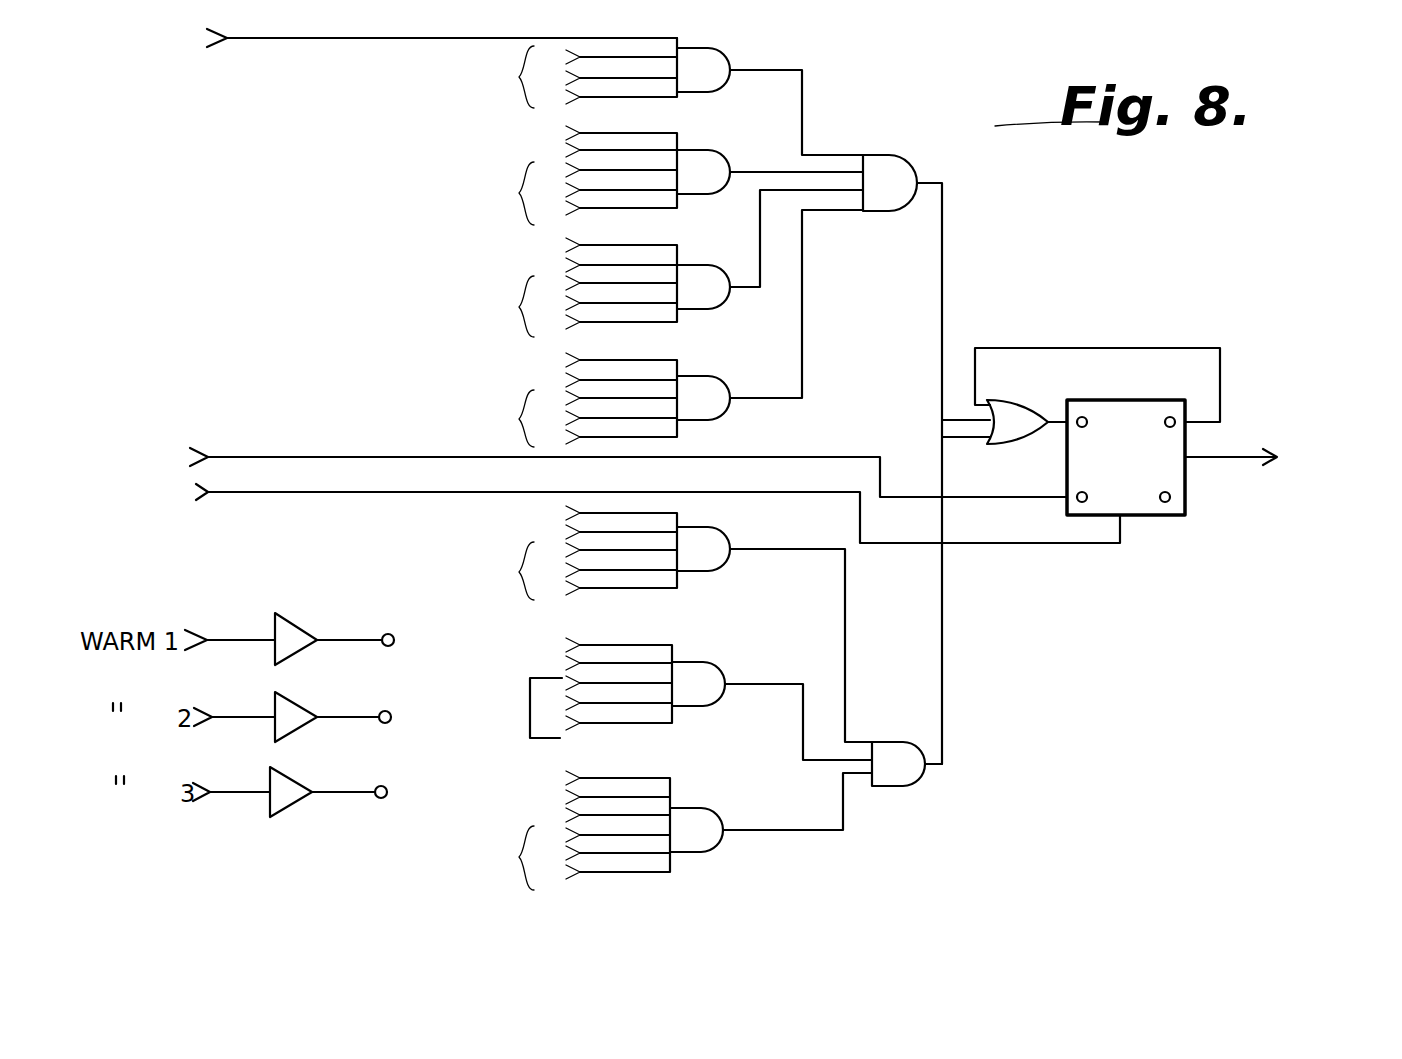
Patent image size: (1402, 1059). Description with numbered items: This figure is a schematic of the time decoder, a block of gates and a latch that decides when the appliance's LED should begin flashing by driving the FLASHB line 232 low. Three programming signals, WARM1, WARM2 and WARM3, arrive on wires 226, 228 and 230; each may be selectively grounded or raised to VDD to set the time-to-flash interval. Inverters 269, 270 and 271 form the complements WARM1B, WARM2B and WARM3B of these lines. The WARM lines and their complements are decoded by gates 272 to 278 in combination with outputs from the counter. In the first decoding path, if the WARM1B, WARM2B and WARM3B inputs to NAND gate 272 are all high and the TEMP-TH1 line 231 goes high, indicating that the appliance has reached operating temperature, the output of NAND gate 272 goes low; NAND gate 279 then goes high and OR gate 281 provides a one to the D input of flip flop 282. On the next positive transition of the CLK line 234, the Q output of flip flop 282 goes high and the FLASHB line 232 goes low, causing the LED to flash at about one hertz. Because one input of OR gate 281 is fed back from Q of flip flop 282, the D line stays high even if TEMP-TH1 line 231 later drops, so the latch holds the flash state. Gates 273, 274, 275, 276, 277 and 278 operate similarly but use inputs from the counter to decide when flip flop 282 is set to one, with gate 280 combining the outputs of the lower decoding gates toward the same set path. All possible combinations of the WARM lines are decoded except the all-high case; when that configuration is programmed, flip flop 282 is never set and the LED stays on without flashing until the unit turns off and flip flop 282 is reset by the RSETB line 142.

The TEMP-TH1 line 231 is at (352, 40).
The NAND gate 272 is at (710, 93).
The gate 273 is at (729, 190).
The gate 274 is at (690, 310).
The gate 275 is at (716, 420).
The NAND gate 279 is at (916, 208).
The CLK line 234 is at (335, 455).
The RSETB line 142 is at (318, 496).
The OR gate 281 is at (1042, 401).
The flip flop 282 is at (1170, 401).
The FLASHB line 232 is at (1228, 460).
The gate 276 is at (716, 571).
The gate 277 is at (705, 706).
The gate 278 is at (710, 852).
The gate 280 is at (907, 786).
The WARM1 programming input 226 is at (243, 640).
The WARM2 programming input 228 is at (247, 717).
The WARM3 programming input 230 is at (245, 792).
The inverter 269 is at (290, 636).
The inverter 270 is at (300, 713).
The inverter 271 is at (293, 790).